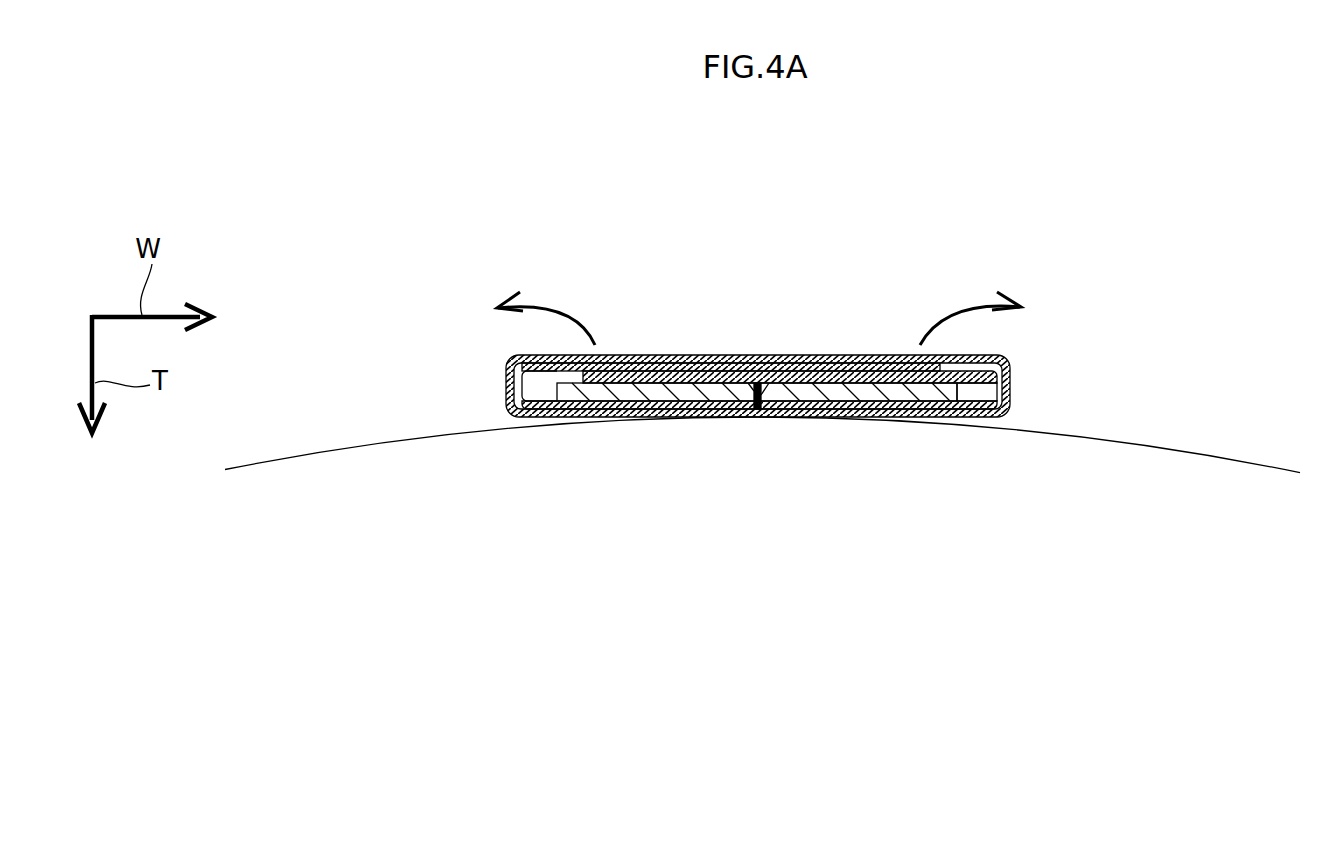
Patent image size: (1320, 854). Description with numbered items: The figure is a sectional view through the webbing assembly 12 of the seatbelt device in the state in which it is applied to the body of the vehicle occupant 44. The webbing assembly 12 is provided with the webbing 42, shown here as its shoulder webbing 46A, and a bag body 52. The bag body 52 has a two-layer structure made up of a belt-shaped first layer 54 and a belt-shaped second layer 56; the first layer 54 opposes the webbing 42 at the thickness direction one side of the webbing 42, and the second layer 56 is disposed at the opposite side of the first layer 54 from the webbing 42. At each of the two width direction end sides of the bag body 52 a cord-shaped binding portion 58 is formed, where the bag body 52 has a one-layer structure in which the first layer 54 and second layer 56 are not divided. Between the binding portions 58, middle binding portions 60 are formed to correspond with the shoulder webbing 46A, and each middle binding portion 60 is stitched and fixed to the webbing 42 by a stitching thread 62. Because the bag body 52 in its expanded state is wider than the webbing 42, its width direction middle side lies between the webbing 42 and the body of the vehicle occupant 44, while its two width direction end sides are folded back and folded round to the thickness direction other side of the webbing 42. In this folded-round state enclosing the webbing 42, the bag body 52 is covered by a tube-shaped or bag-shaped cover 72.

The webbing assembly 12 is at (838, 307).
The vehicle occupant 44 is at (292, 455).
The bag body 52 is at (686, 350).
The first layer 54 is at (860, 423).
The second layer 56 is at (540, 392).
The binding portion 58 is at (620, 368).
The middle binding portion 60 is at (757, 408).
The stitching thread 62 is at (769, 378).
The cover 72 is at (1010, 360).
The shoulder webbing 46A is at (677, 397).
The webbing 42 is at (777, 445).